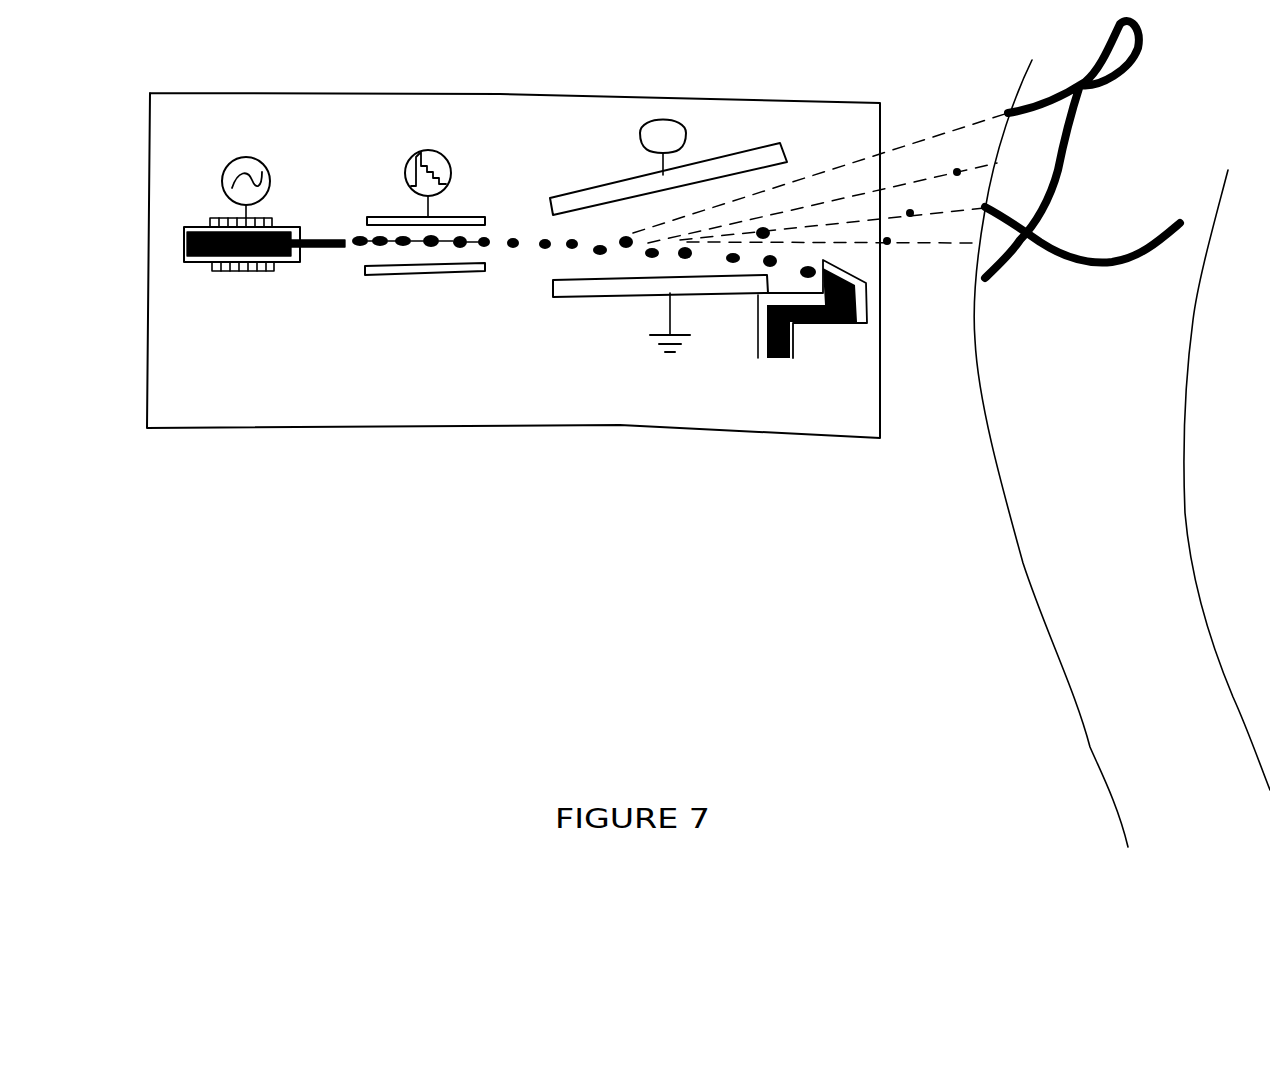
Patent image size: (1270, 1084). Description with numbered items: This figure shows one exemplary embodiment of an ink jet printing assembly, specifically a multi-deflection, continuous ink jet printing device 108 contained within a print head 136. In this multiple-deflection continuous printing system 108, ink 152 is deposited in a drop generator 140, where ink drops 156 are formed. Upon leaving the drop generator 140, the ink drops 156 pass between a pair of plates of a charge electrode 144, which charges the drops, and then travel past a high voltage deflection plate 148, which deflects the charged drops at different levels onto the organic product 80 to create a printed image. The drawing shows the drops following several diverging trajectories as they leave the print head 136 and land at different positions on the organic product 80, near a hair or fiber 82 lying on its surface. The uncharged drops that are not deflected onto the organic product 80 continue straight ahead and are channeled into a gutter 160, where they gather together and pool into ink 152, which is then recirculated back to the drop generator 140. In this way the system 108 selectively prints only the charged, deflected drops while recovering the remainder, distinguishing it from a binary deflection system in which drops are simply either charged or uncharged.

The organic product 80 is at (1112, 395).
The hair / fiber 82 is at (1142, 38).
The multi-deflection continuous ink jet printing device 108 is at (352, 315).
The print head 136 is at (246, 405).
The drop generator 140 is at (264, 165).
The charge electrode 144 is at (446, 157).
The high voltage deflection plate 148 is at (688, 130).
The ink 152 is at (184, 245).
The ink drops 156 is at (517, 252).
The gutter 160 is at (793, 352).